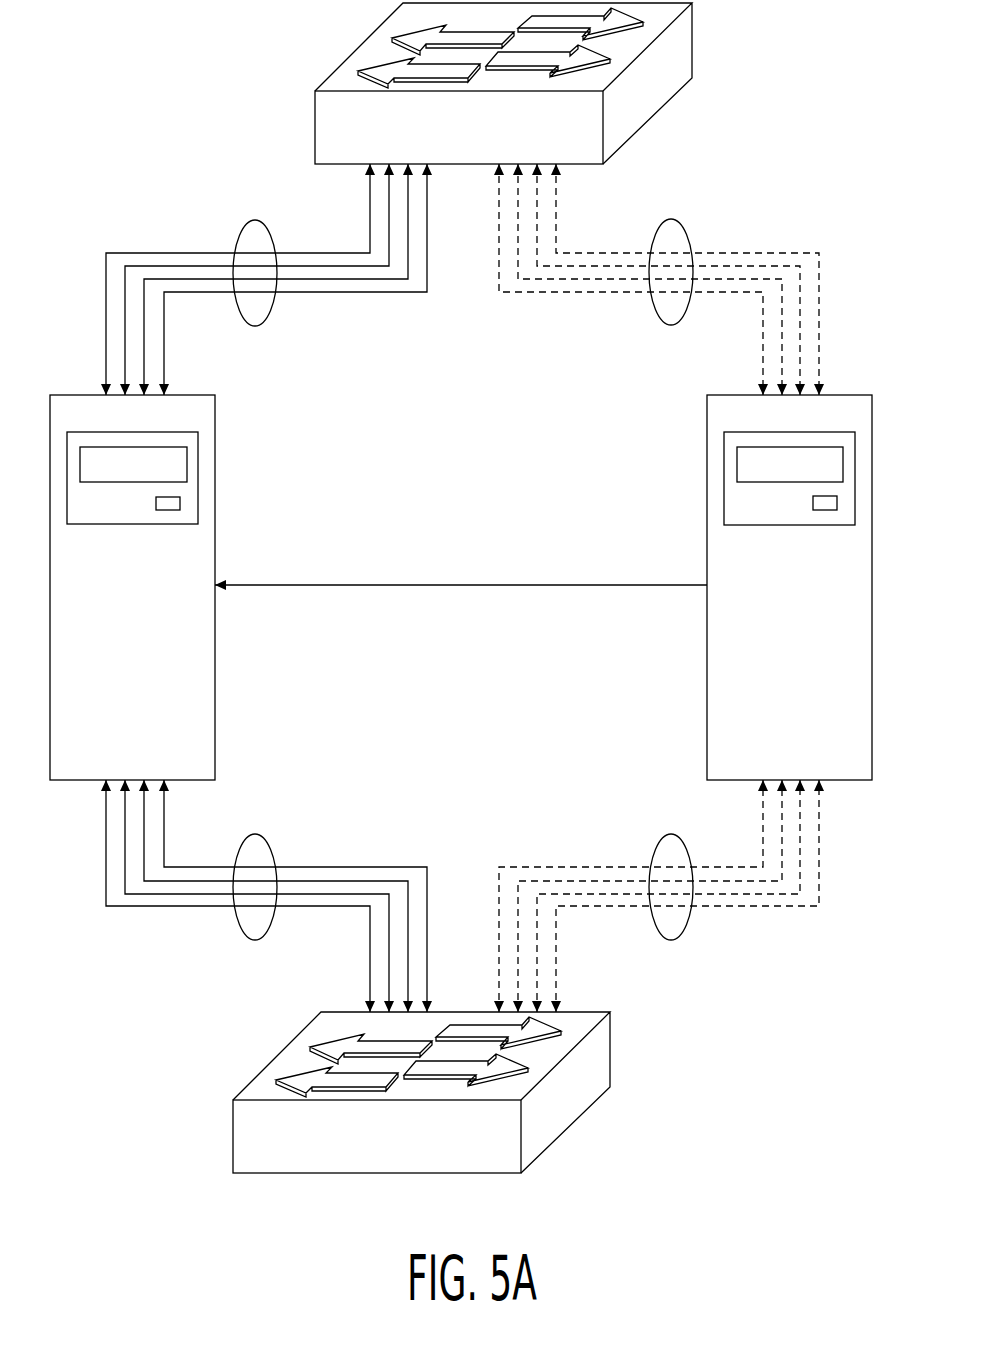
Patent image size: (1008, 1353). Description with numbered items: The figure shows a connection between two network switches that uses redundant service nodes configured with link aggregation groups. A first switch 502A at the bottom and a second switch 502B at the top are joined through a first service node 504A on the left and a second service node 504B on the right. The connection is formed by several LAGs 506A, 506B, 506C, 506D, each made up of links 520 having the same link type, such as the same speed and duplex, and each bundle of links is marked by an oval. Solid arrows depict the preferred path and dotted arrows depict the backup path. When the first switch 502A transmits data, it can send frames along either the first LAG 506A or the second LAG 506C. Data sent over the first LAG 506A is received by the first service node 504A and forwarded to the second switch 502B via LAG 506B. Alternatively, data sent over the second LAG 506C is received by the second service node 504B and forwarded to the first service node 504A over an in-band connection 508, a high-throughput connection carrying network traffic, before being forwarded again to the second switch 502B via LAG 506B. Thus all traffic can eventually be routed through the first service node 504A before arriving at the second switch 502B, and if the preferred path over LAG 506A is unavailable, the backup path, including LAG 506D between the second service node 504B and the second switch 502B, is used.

The first switch 502A is at (583, 1113).
The second switch 502B is at (692, 32).
The first service node 504A is at (215, 463).
The second service node 504B is at (707, 470).
The first LAG 506A is at (235, 927).
The LAG 506B is at (243, 222).
The second LAG 506C is at (688, 925).
The LAG 506D is at (680, 220).
The in-band connection 508 is at (442, 583).
The links 520 is at (198, 292).